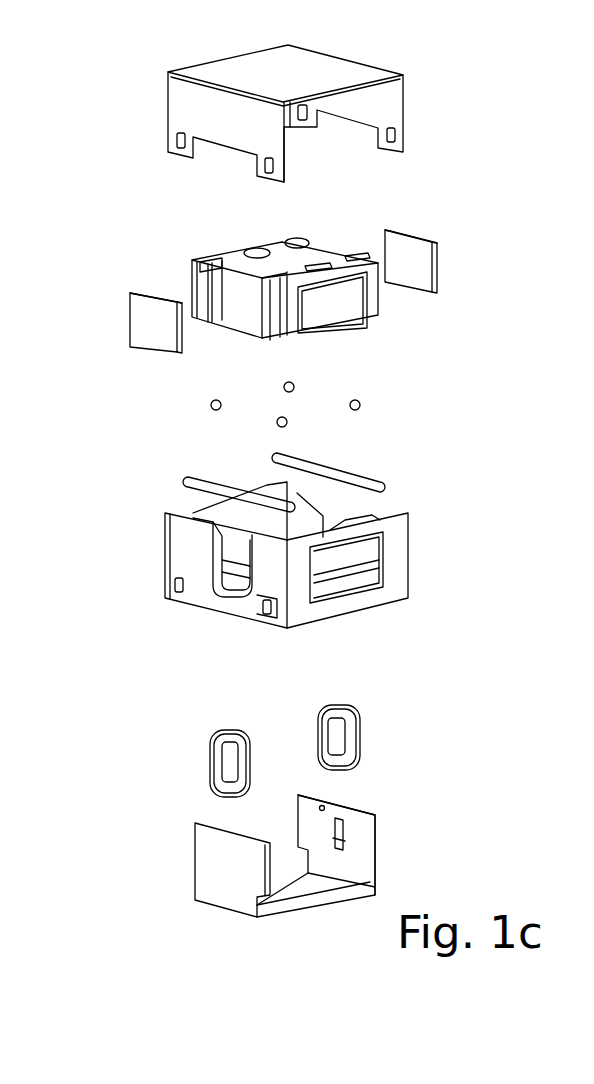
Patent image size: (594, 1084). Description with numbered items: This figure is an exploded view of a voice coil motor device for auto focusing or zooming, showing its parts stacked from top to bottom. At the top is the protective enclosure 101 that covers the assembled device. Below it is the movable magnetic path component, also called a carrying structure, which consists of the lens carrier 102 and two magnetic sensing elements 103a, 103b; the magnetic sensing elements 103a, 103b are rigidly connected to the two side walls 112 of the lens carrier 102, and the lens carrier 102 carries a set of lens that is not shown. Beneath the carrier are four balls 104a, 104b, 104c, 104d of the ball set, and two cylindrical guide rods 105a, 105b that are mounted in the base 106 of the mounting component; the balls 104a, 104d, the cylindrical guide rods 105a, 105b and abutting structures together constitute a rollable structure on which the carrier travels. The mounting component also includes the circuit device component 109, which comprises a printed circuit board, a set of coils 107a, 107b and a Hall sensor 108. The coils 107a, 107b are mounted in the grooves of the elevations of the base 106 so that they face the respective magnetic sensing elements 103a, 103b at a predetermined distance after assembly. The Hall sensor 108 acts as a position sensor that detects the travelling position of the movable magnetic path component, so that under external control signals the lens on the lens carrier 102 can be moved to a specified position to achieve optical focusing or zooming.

The protective enclosure 101 is at (368, 100).
The lens carrier 102 is at (370, 293).
The side walls 112 is at (233, 292).
The magnetic sensing element 103a is at (152, 330).
The magnetic sensing element 103b is at (402, 262).
The ball 104a is at (208, 408).
The ball 104b is at (295, 388).
The ball 104c is at (289, 425).
The ball 104d is at (360, 409).
The cylindrical guide rod 105a is at (220, 485).
The cylindrical guide rod 105b is at (357, 478).
The base 106 is at (345, 605).
The coil 107a is at (218, 730).
The coil 107b is at (355, 725).
The Hall sensor 108 is at (336, 832).
The circuit device component 109 is at (242, 875).